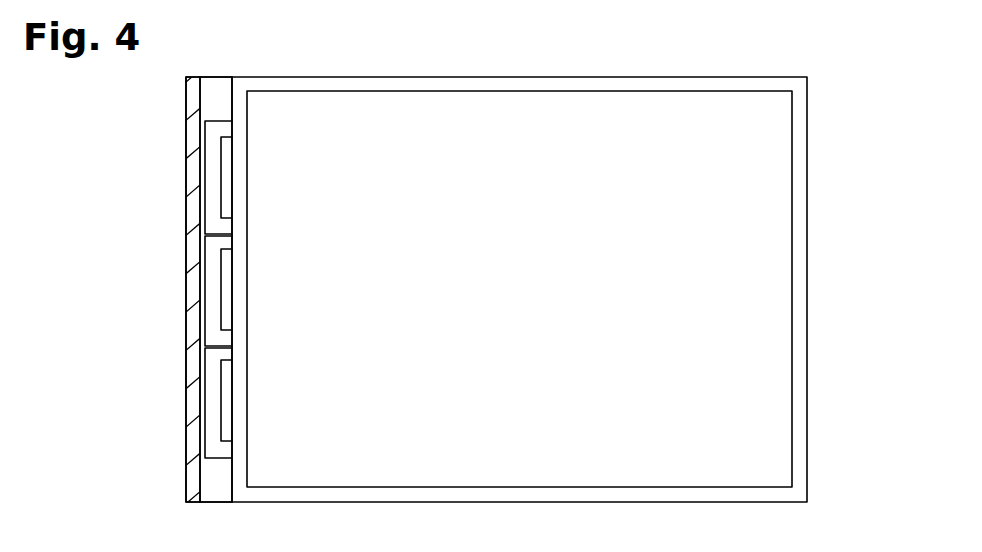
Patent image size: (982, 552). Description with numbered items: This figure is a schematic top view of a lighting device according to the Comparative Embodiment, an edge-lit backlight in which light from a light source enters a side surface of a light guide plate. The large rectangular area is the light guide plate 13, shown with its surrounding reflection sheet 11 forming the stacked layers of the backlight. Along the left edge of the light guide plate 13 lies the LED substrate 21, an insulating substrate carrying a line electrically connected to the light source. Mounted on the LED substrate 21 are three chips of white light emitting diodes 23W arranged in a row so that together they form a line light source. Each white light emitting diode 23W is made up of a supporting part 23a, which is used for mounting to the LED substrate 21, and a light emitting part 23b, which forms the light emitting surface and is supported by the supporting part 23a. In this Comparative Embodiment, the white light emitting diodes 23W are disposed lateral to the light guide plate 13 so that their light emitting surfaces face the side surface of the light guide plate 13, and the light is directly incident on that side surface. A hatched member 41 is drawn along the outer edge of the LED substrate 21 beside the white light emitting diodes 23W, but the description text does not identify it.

The reflection sheet 11 is at (800, 145).
The light guide plate 13 is at (758, 398).
The LED substrate 21 is at (212, 95).
The hatched member 41 is at (192, 175).
The white light emitting diode 23W is at (127, 299).
The supporting part 23a is at (215, 448).
The light emitting part 23b is at (228, 412).